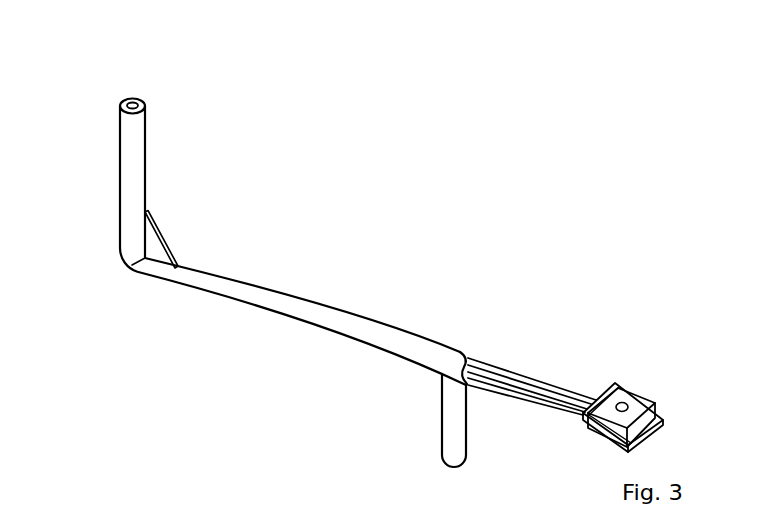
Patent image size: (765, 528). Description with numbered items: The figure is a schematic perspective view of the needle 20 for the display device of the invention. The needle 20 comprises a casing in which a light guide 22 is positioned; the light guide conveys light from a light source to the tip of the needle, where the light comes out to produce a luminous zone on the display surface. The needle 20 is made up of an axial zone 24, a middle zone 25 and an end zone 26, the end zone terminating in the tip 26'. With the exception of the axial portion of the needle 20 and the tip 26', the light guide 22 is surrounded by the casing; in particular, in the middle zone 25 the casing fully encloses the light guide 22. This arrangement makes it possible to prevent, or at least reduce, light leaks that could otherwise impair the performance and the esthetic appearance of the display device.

The needle 20 is at (338, 291).
The light guide 22 is at (452, 420).
The axial zone 24 is at (483, 389).
The middle zone 25 is at (428, 390).
The end zone 26 is at (116, 187).
The tip of the needle 26' is at (199, 85).